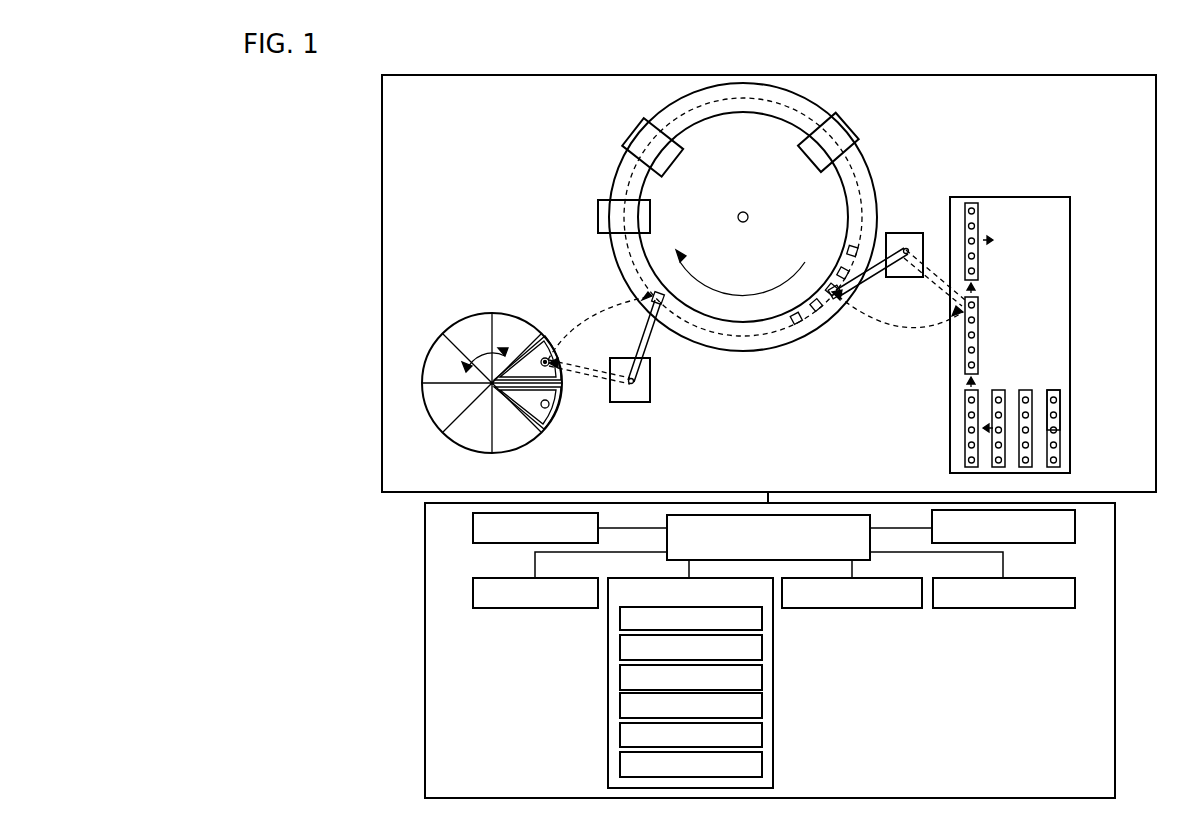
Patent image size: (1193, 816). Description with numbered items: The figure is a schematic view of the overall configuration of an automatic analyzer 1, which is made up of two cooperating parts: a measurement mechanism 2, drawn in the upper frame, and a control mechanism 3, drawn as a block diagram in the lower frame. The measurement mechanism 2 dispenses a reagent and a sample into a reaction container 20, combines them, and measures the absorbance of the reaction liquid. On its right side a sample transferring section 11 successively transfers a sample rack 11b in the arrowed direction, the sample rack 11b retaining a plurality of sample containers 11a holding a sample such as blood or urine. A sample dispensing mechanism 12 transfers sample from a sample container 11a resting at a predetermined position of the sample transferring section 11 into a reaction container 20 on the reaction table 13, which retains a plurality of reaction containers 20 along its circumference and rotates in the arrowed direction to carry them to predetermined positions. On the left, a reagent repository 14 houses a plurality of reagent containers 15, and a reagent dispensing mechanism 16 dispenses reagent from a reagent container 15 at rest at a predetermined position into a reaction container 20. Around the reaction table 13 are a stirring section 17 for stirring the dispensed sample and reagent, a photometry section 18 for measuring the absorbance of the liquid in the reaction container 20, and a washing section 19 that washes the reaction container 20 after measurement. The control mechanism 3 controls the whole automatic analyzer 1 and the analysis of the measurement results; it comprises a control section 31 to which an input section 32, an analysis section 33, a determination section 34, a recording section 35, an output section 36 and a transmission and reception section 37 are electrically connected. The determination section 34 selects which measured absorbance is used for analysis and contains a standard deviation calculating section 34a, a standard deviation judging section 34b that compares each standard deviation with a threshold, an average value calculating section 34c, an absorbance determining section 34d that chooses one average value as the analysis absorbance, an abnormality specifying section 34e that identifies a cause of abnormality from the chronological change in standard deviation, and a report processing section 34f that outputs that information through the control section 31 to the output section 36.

The automatic analyzer 1 is at (1172, 137).
The measurement mechanism 2 is at (382, 119).
The control mechanism 3 is at (1115, 572).
The sample transferring section 11 is at (998, 197).
The sample container 11a is at (1060, 455).
The sample rack 11b is at (1060, 420).
The sample dispensing mechanism 12 is at (894, 233).
The reaction table 13 is at (768, 340).
The reagent repository 14 is at (532, 322).
The reagent container 15 is at (549, 342).
The reagent dispensing mechanism 16 is at (650, 395).
The stirring section 17 is at (598, 223).
The photometry section 18 is at (634, 135).
The washing section 19 is at (850, 123).
The reaction container 20 is at (846, 250).
The control section 31 is at (870, 517).
The input section 32 is at (473, 530).
The analysis section 33 is at (575, 566).
The determination section 34 is at (719, 566).
The standard deviation calculating section 34a is at (762, 618).
The standard deviation judging section 34b is at (762, 647).
The average value calculating section 34c is at (762, 676).
The absorbance determining section 34d is at (762, 705).
The abnormality specifying section 34e is at (762, 735).
The report processing section 34f is at (762, 764).
The recording section 35 is at (895, 566).
The output section 36 is at (1045, 566).
The transmission and reception section 37 is at (1075, 525).